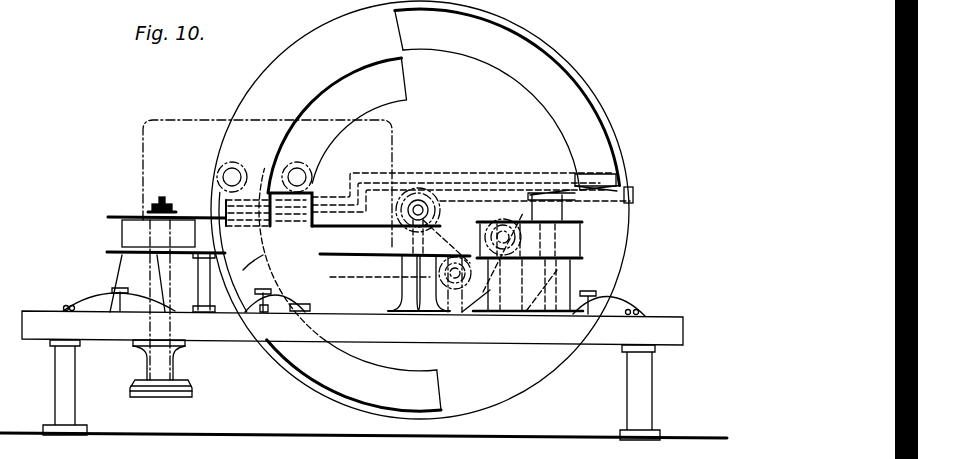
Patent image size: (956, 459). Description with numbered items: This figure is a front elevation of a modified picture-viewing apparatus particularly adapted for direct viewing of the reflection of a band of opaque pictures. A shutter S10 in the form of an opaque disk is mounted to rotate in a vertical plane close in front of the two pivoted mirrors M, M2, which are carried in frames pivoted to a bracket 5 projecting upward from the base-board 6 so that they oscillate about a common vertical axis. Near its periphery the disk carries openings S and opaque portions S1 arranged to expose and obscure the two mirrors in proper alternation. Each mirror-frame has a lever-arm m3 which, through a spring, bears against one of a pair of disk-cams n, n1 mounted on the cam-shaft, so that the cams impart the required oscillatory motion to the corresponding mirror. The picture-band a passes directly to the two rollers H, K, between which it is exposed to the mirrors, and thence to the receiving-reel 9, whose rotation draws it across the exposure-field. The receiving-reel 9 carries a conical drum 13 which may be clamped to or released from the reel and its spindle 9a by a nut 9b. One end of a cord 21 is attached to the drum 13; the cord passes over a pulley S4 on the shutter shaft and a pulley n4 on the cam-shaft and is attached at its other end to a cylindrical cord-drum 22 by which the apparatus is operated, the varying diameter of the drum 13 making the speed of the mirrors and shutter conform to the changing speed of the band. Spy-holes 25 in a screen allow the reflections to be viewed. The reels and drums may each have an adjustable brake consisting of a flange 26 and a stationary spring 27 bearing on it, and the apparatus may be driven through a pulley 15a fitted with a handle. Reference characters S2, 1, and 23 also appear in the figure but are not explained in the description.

The shutter opening S is at (419, 210).
The opaque portion of shutter S1 is at (282, 143).
The shutter S10 is at (420, 210).
The ring drive connection S2 is at (441, 212).
The pulley S4 is at (405, 212).
The spy-holes 25 is at (292, 168).
The mirror M is at (228, 200).
The mirror M2 is at (322, 182).
The lever-arm m3 is at (437, 173).
The disk-cam n is at (590, 178).
The disk-cam n1 is at (634, 190).
The pulley n4 is at (563, 247).
The receiving-reel 9 is at (108, 218).
The spindle 9a is at (163, 200).
The nut 9b is at (155, 210).
The support 1 is at (209, 198).
The roller K is at (212, 230).
The picture-band a is at (391, 241).
The roller H is at (380, 259).
The cord 21 is at (452, 240).
The coil 23 is at (498, 262).
The conical drum 13 is at (124, 272).
The bracket 5 is at (250, 272).
The base-board 6 is at (352, 375).
The pulley 15a is at (179, 368).
The stationary spring 27 is at (107, 300).
The flange 26 is at (351, 321).
The cylindrical cord-drum 22 is at (292, 305).